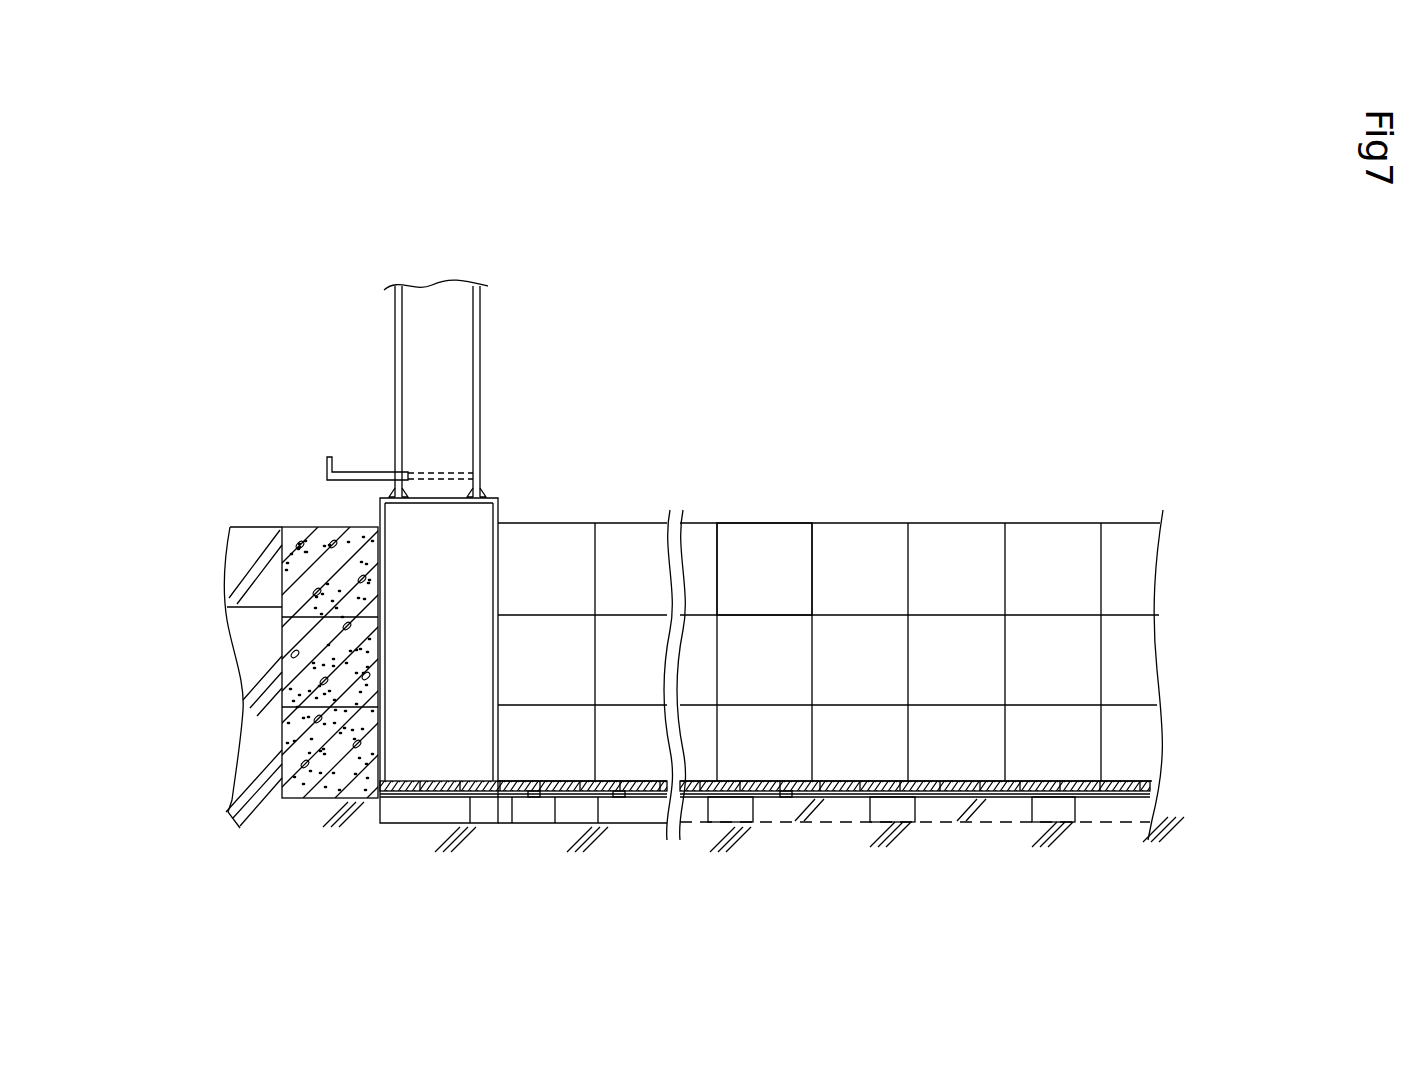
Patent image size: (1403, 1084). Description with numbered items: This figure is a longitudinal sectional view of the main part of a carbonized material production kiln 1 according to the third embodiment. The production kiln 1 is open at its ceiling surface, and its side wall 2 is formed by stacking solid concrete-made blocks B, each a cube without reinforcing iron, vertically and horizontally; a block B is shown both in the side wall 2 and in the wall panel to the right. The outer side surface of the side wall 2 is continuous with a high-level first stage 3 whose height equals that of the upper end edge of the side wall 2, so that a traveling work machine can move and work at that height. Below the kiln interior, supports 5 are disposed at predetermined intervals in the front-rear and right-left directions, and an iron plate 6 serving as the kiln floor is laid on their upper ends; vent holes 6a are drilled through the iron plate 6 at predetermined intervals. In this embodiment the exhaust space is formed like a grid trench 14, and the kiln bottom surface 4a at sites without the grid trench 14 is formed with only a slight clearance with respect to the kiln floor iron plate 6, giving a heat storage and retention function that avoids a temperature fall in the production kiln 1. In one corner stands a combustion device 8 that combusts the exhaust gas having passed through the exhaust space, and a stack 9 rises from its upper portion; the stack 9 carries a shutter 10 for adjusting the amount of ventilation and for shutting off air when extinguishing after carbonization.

The carbonized material production kiln 1 is at (910, 505).
The side wall 2 is at (310, 520).
The first stage 3 is at (250, 527).
The kiln bottom surface 4a is at (947, 797).
The support 5 is at (535, 797).
The iron plate 6 is at (1103, 790).
The vent hole 6a is at (1042, 786).
The combustion device 8 is at (470, 548).
The stack 9 is at (463, 353).
The shutter 10 is at (366, 472).
The grid trench 14 is at (892, 805).
The block B is at (775, 548).